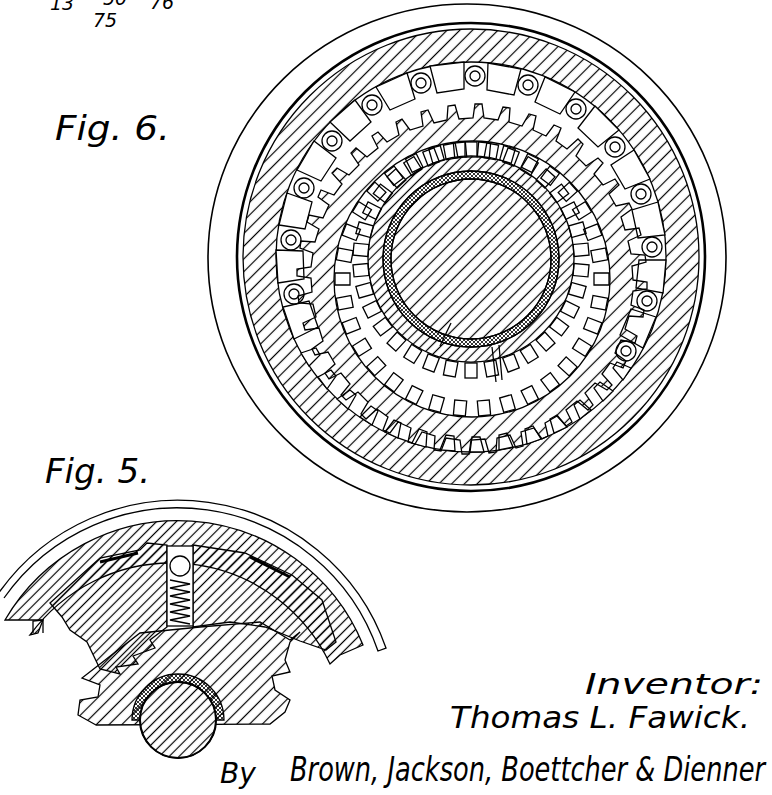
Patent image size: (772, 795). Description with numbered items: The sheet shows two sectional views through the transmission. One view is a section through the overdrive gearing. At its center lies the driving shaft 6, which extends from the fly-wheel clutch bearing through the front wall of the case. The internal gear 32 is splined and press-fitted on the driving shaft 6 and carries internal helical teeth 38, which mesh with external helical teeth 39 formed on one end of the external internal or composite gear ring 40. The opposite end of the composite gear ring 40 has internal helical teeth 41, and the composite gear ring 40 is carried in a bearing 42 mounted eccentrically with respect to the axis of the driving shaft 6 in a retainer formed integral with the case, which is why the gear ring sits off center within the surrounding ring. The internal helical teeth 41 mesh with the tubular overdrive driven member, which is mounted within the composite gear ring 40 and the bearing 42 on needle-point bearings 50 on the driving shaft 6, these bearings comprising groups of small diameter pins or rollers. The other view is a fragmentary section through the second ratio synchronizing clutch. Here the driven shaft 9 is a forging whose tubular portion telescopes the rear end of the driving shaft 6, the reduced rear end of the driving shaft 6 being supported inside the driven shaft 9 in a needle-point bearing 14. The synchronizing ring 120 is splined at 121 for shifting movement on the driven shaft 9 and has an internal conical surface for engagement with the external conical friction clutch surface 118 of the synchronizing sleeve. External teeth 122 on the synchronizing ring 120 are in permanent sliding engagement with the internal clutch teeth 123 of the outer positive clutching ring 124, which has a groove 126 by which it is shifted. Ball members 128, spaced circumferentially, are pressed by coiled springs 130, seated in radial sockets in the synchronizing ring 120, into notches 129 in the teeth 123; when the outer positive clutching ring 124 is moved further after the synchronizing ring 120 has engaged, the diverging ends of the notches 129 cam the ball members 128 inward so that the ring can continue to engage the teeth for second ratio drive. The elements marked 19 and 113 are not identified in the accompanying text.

In FIG. 6, the driving shaft 6 is at (441, 333).
In FIG. 5, the driving shaft 6 is at (148, 748).
In FIG. 5, the driven shaft 9 is at (277, 701).
In FIG. 5, the bearing 14 is at (134, 717).
In FIG. 6, the bearing ring 19 is at (522, 320).
In FIG. 6, the internal gear 32 is at (363, 73).
In FIG. 6, the internal helical teeth 38 is at (292, 248).
In FIG. 6, the external helical teeth 39 is at (300, 300).
In FIG. 6, the composite gear ring 40 is at (292, 358).
In FIG. 6, the internal helical teeth 41 is at (605, 393).
In FIG. 6, the bearing 42 is at (330, 133).
In FIG. 6, the needle-point bearings 50 is at (492, 345).
In FIG. 6, the casing 113 is at (612, 45).
In FIG. 6, the external conical friction clutch surface 118 is at (456, 347).
In FIG. 5, the synchronizing ring 120 is at (85, 645).
In FIG. 5, the splines 121 is at (273, 673).
In FIG. 5, the external teeth 122 is at (270, 572).
In FIG. 5, the internal clutch teeth 123 is at (38, 636).
In FIG. 5, the outer positive clutching ring 124 is at (353, 628).
In FIG. 5, the groove 126 is at (332, 561).
In FIG. 5, the ball members 128 is at (190, 562).
In FIG. 5, the notches 129 is at (180, 553).
In FIG. 5, the coiled springs 130 is at (118, 640).